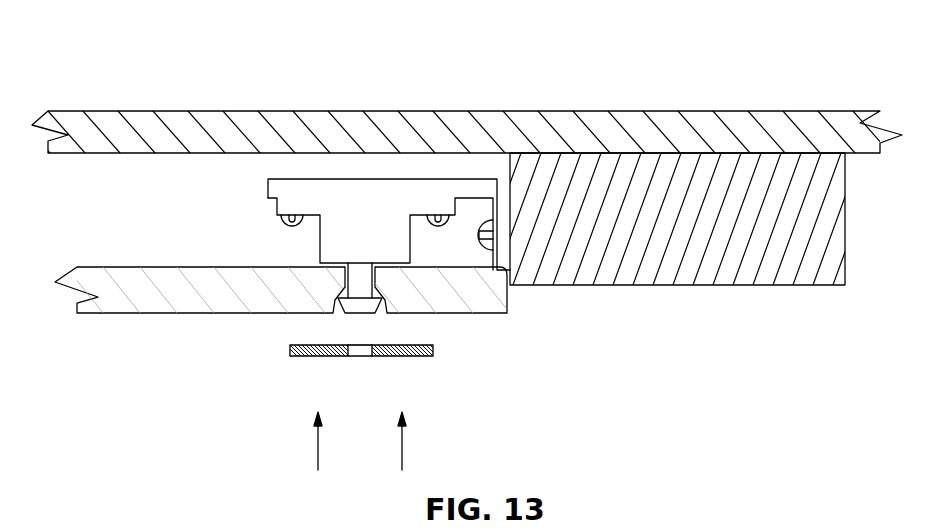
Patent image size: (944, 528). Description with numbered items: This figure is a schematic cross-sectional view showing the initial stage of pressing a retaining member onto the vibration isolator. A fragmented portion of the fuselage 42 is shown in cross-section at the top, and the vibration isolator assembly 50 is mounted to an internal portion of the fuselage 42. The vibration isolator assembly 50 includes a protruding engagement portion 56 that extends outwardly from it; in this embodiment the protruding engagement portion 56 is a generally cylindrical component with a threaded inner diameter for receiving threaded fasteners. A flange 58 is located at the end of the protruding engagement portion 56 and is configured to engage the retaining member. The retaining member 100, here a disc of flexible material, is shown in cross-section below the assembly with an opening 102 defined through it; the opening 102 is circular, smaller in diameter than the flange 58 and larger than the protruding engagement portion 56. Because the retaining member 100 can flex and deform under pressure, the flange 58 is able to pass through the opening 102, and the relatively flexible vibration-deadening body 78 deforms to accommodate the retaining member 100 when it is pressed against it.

The fuselage 42 is at (348, 94).
The vibration isolator assembly 50 is at (317, 222).
The protruding engagement portion 56 is at (362, 267).
The flange 58 is at (367, 313).
The vibration-deadening body 78 is at (183, 315).
The retaining member 100 is at (288, 350).
The opening 102 is at (358, 357).